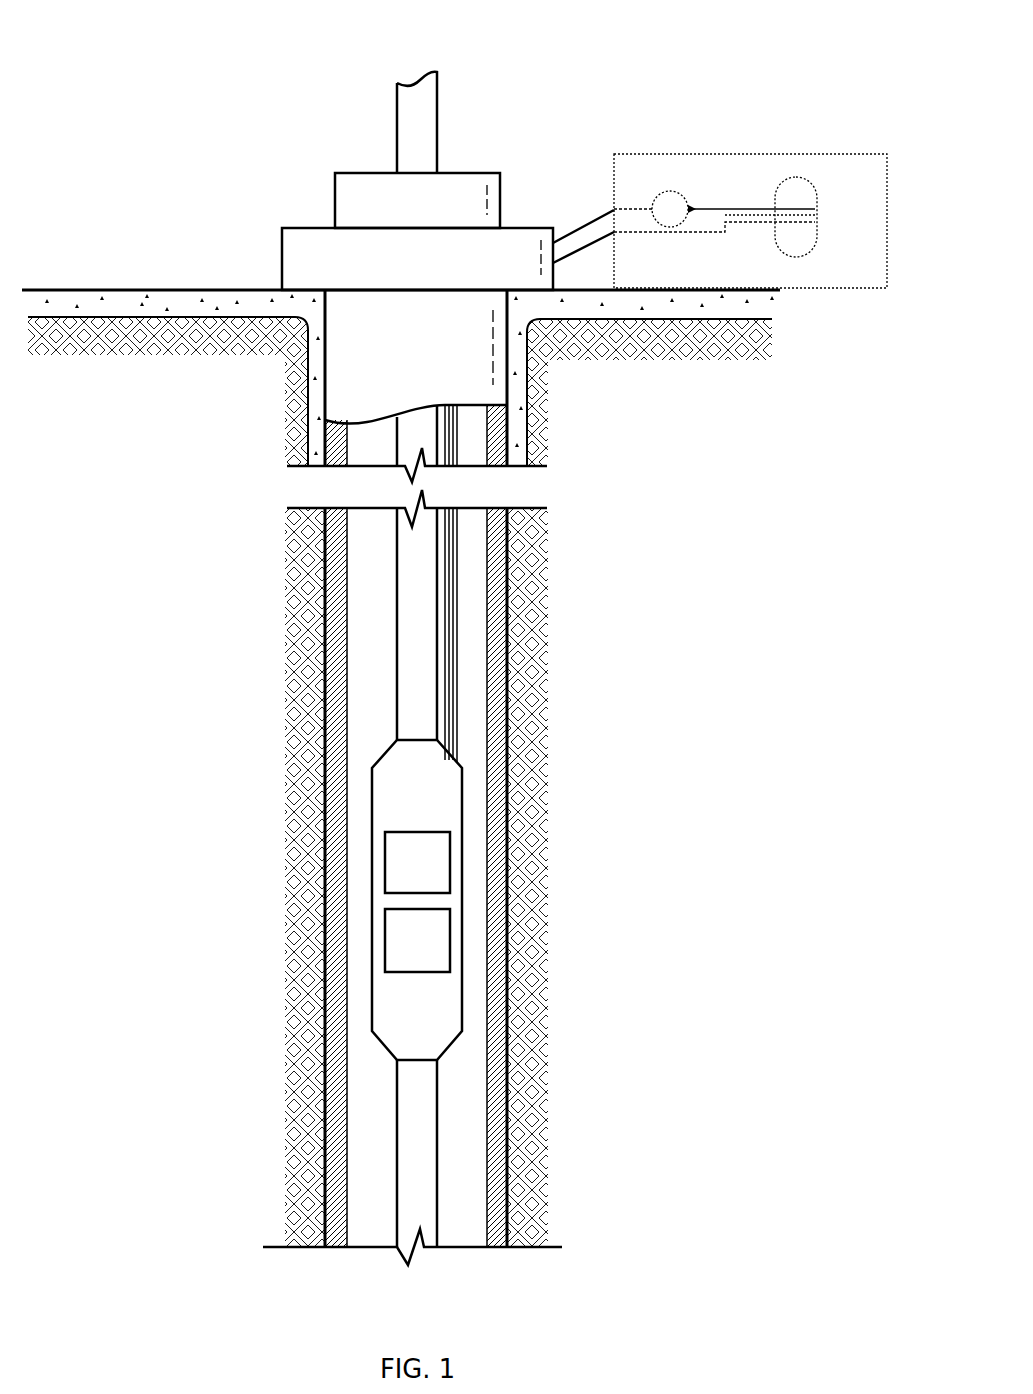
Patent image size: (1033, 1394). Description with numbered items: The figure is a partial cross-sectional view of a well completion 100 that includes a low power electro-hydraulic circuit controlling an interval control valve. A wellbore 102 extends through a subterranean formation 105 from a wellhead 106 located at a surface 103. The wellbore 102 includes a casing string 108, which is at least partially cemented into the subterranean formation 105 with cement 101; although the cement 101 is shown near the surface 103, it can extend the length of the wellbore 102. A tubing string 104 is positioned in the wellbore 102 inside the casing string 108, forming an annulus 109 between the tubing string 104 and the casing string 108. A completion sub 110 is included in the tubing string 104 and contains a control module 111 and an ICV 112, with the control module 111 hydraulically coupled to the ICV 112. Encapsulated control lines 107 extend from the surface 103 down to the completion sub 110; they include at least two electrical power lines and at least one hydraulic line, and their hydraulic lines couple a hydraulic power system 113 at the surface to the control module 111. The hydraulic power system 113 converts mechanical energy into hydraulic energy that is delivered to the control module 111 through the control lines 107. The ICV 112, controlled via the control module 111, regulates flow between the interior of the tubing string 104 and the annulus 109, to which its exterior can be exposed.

The well completion 100 is at (102, 37).
The cement 101 is at (195, 290).
The wellbore 102 is at (507, 578).
The surface 103 is at (140, 290).
The tubing string 104 is at (397, 560).
The subterranean formation 105 is at (166, 437).
The wellhead 106 is at (545, 228).
The encapsulated control lines 107 is at (450, 443).
The casing string 108 is at (333, 642).
The annulus 109 is at (470, 803).
The completion sub 110 is at (383, 752).
The control module 111 is at (436, 875).
The ICV 112 is at (436, 955).
The hydraulic power system 113 is at (752, 154).